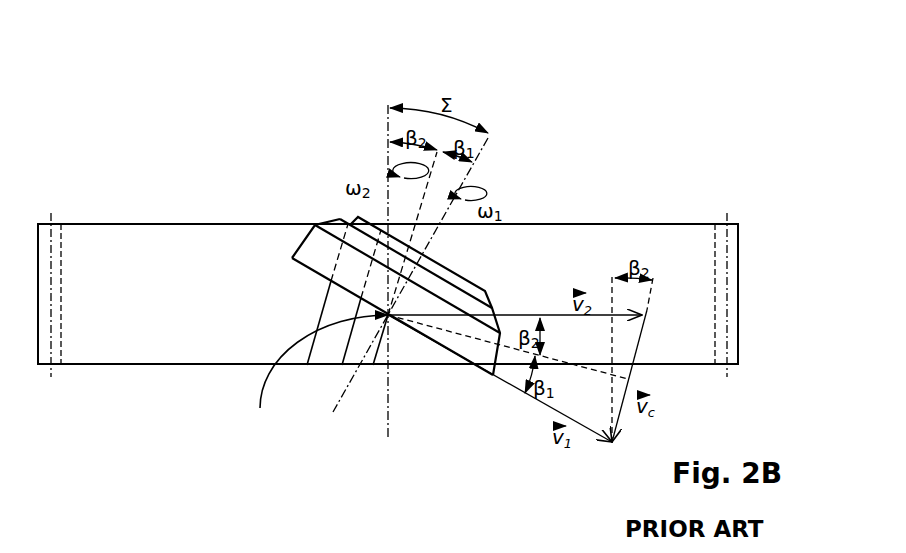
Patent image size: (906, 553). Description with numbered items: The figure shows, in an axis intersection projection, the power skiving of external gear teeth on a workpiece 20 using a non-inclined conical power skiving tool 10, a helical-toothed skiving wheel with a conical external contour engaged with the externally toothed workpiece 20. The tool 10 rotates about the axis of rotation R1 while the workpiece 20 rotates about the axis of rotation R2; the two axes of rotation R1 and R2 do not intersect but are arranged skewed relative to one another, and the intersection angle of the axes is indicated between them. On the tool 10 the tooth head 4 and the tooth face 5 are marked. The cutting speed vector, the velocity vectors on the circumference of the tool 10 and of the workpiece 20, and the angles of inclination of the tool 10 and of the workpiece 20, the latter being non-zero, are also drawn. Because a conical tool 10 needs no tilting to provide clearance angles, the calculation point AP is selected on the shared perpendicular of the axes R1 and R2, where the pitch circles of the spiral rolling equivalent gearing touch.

The workpiece 20 is at (82, 215).
The power skiving tool 10 is at (313, 224).
The tooth head 4 is at (289, 261).
The tooth face 5 is at (427, 338).
The axis of rotation of the tool R1 is at (402, 290).
The axis of rotation of the workpiece R2 is at (391, 287).
The calculation point AP is at (317, 379).